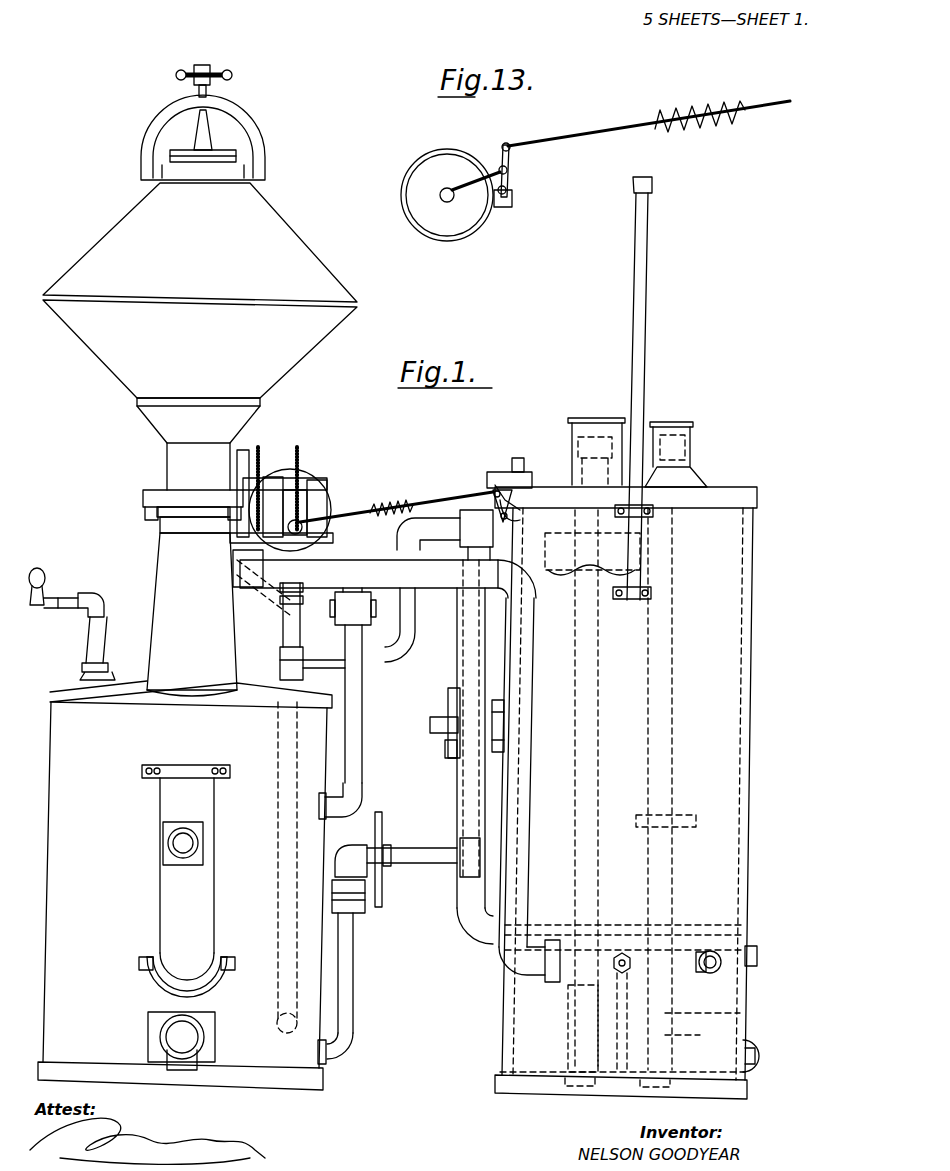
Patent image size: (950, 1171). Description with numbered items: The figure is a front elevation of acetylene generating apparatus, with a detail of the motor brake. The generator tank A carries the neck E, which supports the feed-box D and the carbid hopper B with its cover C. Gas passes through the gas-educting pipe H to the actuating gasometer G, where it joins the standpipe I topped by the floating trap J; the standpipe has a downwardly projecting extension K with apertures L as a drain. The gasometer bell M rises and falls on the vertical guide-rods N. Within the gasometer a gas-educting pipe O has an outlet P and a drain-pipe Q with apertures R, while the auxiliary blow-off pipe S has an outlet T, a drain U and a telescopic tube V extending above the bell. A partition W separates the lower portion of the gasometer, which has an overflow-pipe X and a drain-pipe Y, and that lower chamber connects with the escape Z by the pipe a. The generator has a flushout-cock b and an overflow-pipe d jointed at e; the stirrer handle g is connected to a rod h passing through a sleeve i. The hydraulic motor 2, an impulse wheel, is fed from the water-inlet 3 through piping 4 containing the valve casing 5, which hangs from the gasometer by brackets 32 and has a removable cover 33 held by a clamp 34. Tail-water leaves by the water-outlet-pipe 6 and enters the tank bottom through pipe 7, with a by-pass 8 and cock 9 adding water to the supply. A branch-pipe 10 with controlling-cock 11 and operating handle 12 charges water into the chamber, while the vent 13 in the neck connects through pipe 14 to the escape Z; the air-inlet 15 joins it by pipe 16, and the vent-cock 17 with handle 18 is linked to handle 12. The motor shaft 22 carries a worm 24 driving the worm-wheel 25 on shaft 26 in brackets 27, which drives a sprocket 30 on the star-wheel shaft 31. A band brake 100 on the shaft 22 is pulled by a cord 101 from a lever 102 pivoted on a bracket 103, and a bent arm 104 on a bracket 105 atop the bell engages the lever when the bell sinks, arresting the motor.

In FIG. 1, the generator tank A is at (185, 885).
In FIG. 1, the carbid hopper B is at (310, 247).
In FIG. 1, the cover C is at (215, 157).
In FIG. 1, the feed-box D is at (167, 428).
In FIG. 1, the neck E is at (192, 614).
In FIG. 1, the actuating gasometer G is at (735, 733).
In FIG. 1, the gas-educting pipe H is at (410, 580).
In FIG. 1, the standpipe I is at (586, 846).
In FIG. 1, the floating trap J is at (524, 582).
In FIG. 1, the downwardly projecting extension K is at (575, 1012).
In FIG. 1, the apertures L is at (568, 1063).
In FIG. 1, the gasometer bell M is at (757, 498).
In FIG. 1, the vertical guide-rods N is at (645, 318).
In FIG. 1, the gas-educting pipe O is at (670, 888).
In FIG. 1, the outlet P is at (712, 972).
In FIG. 1, the drain-pipe Q is at (675, 1035).
In FIG. 1, the apertures R is at (678, 1063).
In FIG. 1, the auxiliary gas-educting pipe or blow-off S is at (675, 535).
In FIG. 1, the outlet T is at (753, 950).
In FIG. 1, the drain U is at (700, 1013).
In FIG. 1, the telescopic tube V is at (693, 450).
In FIG. 1, the partition W is at (690, 925).
In FIG. 1, the overflow-pipe X is at (620, 996).
In FIG. 1, the drain-pipe Y is at (752, 1054).
In FIG. 1, the escape Z is at (492, 505).
In FIG. 1, the pipe a is at (470, 628).
In FIG. 1, the flushout-cock b is at (190, 1068).
In FIG. 1, the overflow-pipe d is at (200, 896).
In FIG. 1, the joint e is at (219, 954).
In FIG. 1, the handle g is at (62, 602).
In FIG. 1, the rod h is at (104, 617).
In FIG. 1, the sleeve i is at (103, 640).
In FIG. 1, the hydraulic actuating motor 2 is at (330, 512).
In FIG. 1, the water-inlet 3 is at (455, 870).
In FIG. 1, the piping 4 is at (465, 808).
In FIG. 1, the valve casing 5 is at (446, 752).
In FIG. 1, the water-outlet-pipe 6 is at (284, 623).
In FIG. 1, the pipe 7 is at (282, 832).
In FIG. 1, the by-pass 8 is at (318, 665).
In FIG. 1, the cock 9 is at (398, 622).
In FIG. 1, the branch-pipe 10 is at (415, 852).
In FIG. 1, the controlling-cock 11 is at (354, 895).
In FIG. 1, the operating handle 12 is at (378, 880).
In FIG. 1, the vent 13 is at (237, 550).
In FIG. 1, the pipe 14 is at (345, 592).
In FIG. 1, the air-inlet 15 is at (322, 800).
In FIG. 1, the pipe 16 is at (352, 740).
In FIG. 1, the vent-cock 17 is at (350, 612).
In FIG. 1, the handle 18 is at (418, 612).
In FIG. 13, the motor shaft 22 is at (458, 188).
In FIG. 1, the motor shaft 22 is at (305, 527).
In FIG. 1, the worm 24 is at (264, 522).
In FIG. 1, the worm-wheel 25 is at (298, 452).
In FIG. 1, the shaft 26 is at (300, 486).
In FIG. 1, the brackets 27 is at (322, 492).
In FIG. 1, the sprocket 30 is at (258, 468).
In FIG. 1, the shaft 31 is at (262, 480).
In FIG. 1, the brackets 32 is at (500, 703).
In FIG. 1, the removable cover 33 is at (448, 700).
In FIG. 1, the clamp 34 is at (440, 727).
In FIG. 13, the band brake 100 is at (418, 153).
In FIG. 1, the band brake 100 is at (330, 490).
In FIG. 13, the cord or wire 101 is at (602, 125).
In FIG. 1, the cord or wire 101 is at (426, 497).
In FIG. 1, the lever 102 is at (512, 505).
In FIG. 1, the bracket 103 is at (508, 522).
In FIG. 1, the bent rod or arm 104 is at (490, 485).
In FIG. 1, the bracket 105 is at (505, 480).